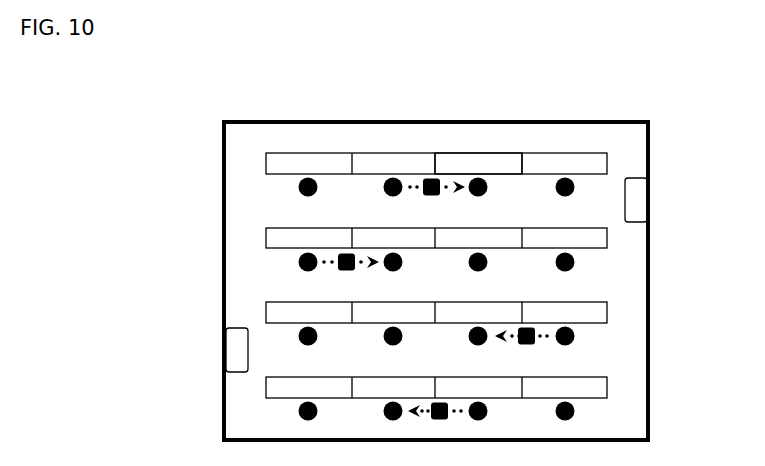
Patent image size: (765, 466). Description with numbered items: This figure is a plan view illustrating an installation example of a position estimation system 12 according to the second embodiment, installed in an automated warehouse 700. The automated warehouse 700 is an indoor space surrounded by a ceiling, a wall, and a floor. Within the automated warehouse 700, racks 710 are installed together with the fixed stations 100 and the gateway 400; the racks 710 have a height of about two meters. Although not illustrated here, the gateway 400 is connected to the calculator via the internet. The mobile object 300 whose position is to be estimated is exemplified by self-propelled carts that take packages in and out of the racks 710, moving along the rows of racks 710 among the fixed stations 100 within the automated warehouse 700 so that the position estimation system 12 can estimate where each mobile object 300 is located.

The position estimation system 12 is at (563, 88).
The fixed station 100 is at (428, 178).
The mobile object 300 is at (387, 178).
The gateway 400 is at (644, 177).
The automated warehouse 700 is at (308, 137).
The rack 710 is at (492, 153).